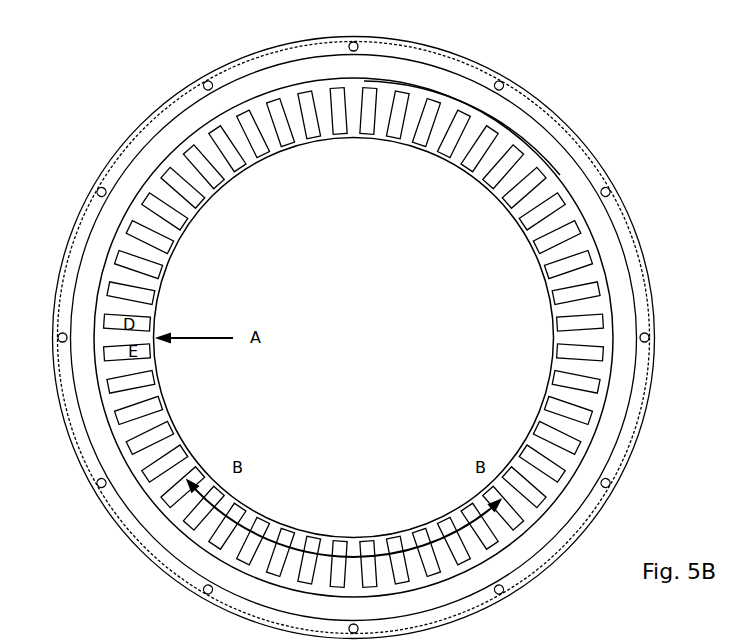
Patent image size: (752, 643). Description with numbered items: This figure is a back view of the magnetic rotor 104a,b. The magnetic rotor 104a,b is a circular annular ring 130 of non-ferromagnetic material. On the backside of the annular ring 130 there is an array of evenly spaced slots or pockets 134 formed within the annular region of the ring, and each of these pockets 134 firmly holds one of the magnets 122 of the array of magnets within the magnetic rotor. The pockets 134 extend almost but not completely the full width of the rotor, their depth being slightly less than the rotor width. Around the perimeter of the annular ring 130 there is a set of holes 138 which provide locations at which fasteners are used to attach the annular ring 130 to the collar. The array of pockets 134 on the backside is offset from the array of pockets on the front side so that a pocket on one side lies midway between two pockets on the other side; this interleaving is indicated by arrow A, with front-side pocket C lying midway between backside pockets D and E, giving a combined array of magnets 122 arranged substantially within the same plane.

The magnetic rotor 104a,b is at (74, 530).
The magnet 122 is at (547, 207).
The annular ring 130 is at (633, 435).
The pockets 134 is at (550, 180).
The holes 138 is at (205, 83).